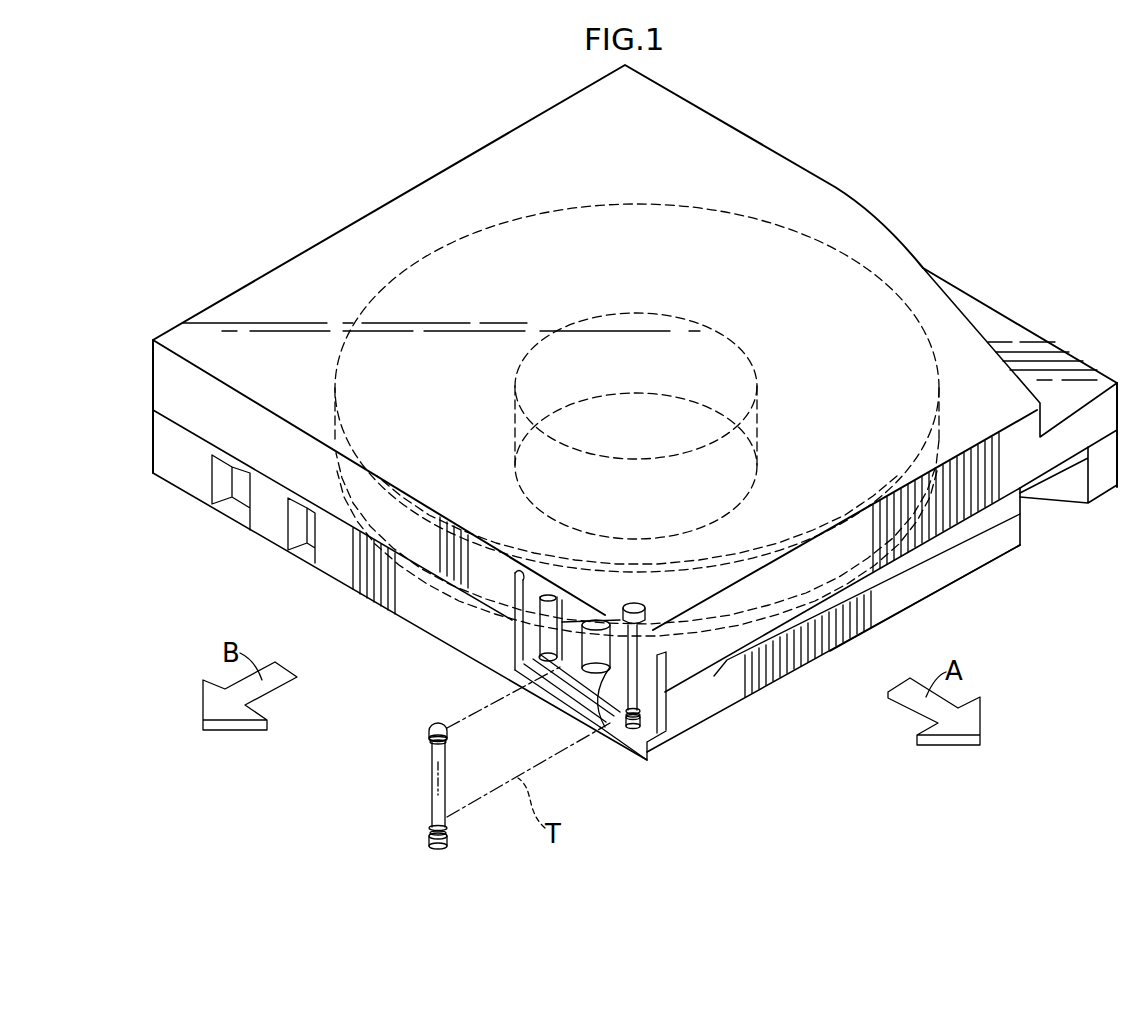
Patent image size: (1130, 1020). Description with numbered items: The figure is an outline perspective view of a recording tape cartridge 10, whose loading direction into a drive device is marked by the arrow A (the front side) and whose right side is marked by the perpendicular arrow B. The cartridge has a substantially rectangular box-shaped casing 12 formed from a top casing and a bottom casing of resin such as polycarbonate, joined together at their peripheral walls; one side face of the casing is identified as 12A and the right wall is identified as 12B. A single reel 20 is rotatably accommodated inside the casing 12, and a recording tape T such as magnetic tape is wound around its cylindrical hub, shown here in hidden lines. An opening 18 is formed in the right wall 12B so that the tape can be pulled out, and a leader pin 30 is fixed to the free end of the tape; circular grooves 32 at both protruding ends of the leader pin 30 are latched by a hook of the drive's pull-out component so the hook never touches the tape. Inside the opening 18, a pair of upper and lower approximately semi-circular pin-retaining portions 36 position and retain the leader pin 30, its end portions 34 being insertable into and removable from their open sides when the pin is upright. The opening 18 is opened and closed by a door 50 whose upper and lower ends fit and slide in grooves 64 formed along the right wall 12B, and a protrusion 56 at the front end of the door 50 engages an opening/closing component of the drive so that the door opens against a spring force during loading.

The recording tape cartridge 10 is at (635, 412).
The casing 12 is at (998, 308).
The side face of tray 12A is at (930, 576).
The right wall 12B is at (268, 527).
The opening 18 is at (540, 668).
The reel 20 is at (637, 203).
The leader pin 30 is at (412, 784).
The circular grooves 32 is at (430, 743).
The end portions 34 is at (427, 722).
The pin-retaining portions 36 is at (608, 732).
The door 50 is at (479, 647).
The protrusion 56 is at (516, 645).
The grooves 64 is at (625, 612).